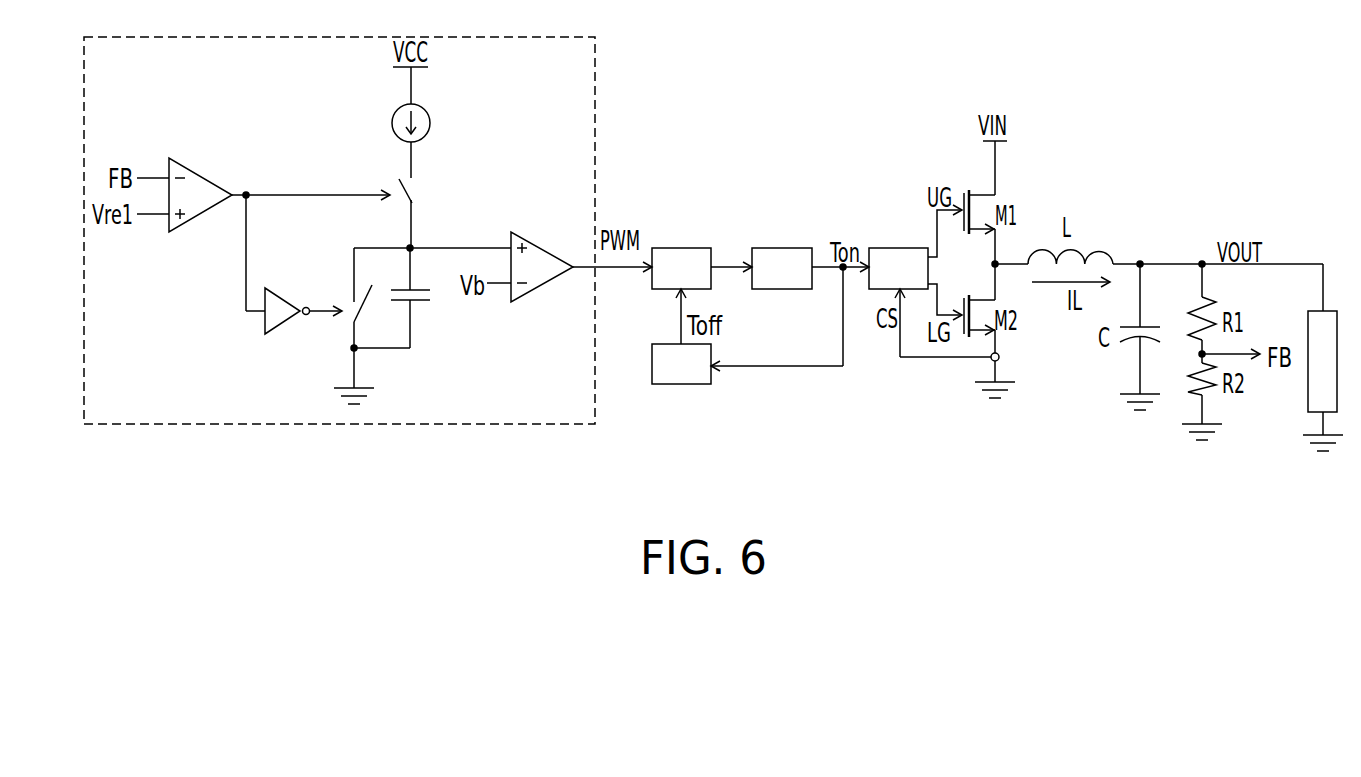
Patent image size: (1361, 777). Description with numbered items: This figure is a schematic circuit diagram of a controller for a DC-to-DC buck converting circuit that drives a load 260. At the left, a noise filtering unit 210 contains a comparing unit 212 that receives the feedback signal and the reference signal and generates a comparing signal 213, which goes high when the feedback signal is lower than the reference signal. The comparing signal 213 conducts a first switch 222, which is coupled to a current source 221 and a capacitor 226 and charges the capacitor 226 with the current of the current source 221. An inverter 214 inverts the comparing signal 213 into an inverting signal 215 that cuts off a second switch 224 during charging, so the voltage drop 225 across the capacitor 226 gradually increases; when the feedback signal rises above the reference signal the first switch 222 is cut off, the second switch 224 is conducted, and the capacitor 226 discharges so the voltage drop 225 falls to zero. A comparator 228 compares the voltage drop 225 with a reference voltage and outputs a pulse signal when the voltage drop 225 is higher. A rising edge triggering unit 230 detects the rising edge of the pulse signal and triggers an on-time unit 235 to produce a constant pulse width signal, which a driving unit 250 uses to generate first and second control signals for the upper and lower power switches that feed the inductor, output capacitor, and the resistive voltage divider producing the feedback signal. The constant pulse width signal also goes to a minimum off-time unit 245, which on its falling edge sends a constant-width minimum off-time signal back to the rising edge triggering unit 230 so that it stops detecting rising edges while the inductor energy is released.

The noise filtering unit 210 is at (594, 72).
The comparing unit 212 is at (203, 185).
The comparing signal 213 is at (316, 182).
The inverter 214 is at (272, 322).
The inverting signal 215 is at (323, 296).
The current source 221 is at (431, 124).
The first switch 222 is at (413, 190).
The second switch 224 is at (373, 298).
The voltage drop 225 is at (432, 234).
The capacitor 226 is at (428, 303).
The comparator 228 is at (545, 282).
The rising edge triggering unit 230 is at (698, 282).
The on-time unit 235 is at (799, 282).
The minimum off-time unit 245 is at (698, 378).
The driving unit 250 is at (915, 282).
The load 260 is at (1310, 318).